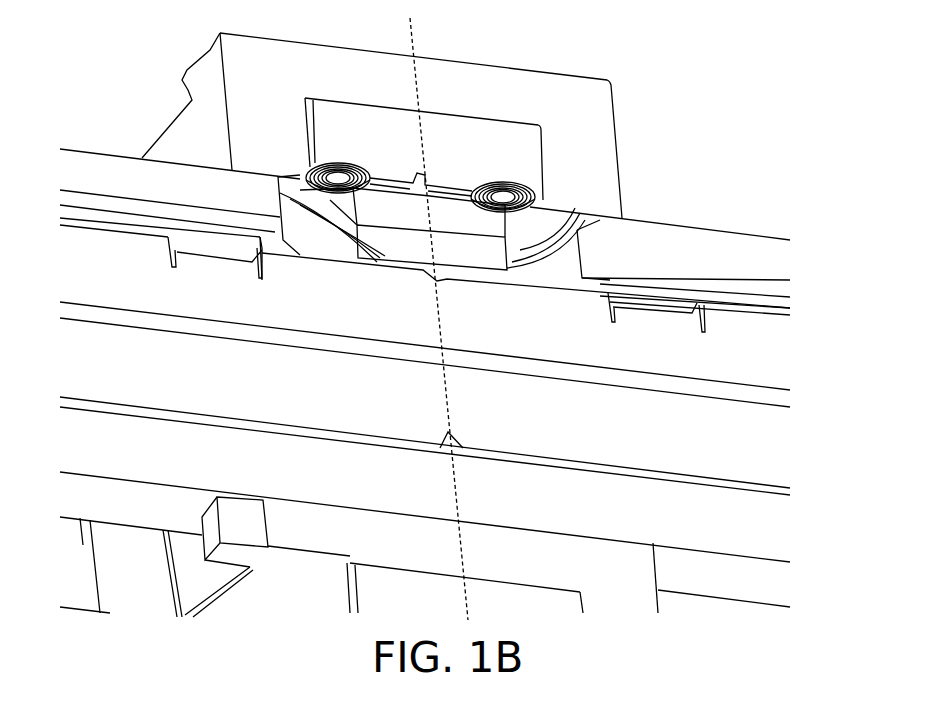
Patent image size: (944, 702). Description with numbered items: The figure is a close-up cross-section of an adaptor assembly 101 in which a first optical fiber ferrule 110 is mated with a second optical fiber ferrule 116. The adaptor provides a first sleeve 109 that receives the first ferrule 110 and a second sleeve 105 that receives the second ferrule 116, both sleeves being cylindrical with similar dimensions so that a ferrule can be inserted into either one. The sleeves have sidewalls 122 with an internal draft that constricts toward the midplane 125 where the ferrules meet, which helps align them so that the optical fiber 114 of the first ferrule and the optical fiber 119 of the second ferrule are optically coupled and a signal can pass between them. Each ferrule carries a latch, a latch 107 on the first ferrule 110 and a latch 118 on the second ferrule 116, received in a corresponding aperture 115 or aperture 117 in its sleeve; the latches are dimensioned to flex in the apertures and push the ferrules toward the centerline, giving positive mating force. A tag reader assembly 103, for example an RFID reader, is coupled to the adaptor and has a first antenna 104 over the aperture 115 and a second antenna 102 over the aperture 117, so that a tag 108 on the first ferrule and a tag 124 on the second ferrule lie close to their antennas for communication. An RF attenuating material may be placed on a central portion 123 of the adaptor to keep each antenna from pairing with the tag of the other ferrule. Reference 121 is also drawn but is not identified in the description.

The adaptor assembly 101 is at (703, 182).
The second antenna 102 is at (525, 190).
The tag reader assembly 103 is at (424, 149).
The first antenna 104 is at (338, 165).
The second sleeve 105 is at (660, 243).
The latch 107 is at (293, 210).
The tag 108 is at (200, 240).
The first sleeve 109 is at (180, 183).
The first optical fiber ferrule 110 is at (525, 272).
The optical fiber 114 is at (125, 310).
The aperture 115 is at (342, 218).
The second optical fiber ferrule 116 is at (425, 346).
The aperture 117 is at (573, 227).
The latch 118 is at (573, 242).
The optical fiber 119 is at (593, 367).
The rail 121 is at (787, 315).
The sidewalls 122 is at (180, 413).
The central portion 123 is at (403, 229).
The tag 124 is at (630, 310).
The midplane 125 is at (417, 52).